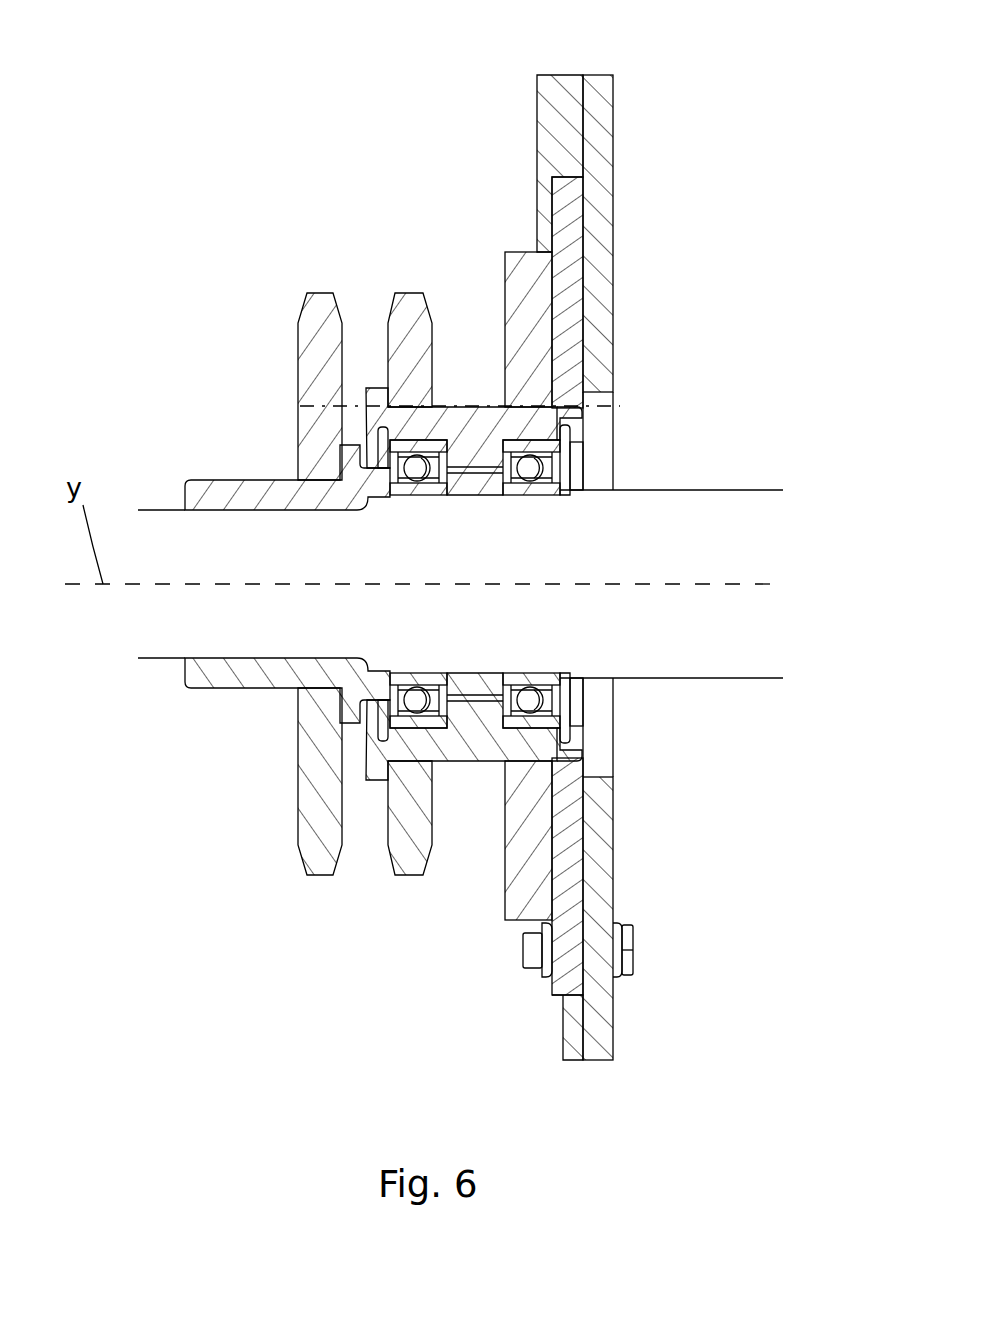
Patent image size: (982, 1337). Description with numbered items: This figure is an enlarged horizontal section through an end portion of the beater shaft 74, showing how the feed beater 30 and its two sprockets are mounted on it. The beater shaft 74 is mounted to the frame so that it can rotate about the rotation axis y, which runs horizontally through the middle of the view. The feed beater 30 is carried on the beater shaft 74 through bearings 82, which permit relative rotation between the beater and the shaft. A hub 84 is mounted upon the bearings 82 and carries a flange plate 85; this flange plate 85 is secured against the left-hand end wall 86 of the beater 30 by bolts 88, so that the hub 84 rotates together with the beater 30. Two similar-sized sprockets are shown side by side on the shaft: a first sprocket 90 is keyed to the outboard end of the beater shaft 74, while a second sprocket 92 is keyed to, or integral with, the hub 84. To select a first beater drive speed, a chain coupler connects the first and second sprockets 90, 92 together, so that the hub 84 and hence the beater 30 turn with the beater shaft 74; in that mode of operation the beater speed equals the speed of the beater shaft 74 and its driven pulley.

The feed beater 30 is at (719, 221).
The beater shaft 74 is at (723, 659).
The bearings 82 is at (512, 723).
The hub 84 is at (484, 408).
The flange plate 85 is at (563, 207).
The left-hand end wall 86 is at (597, 122).
The bolts 88 is at (530, 957).
The first sprocket 90 is at (318, 300).
The second sprocket 92 is at (406, 300).